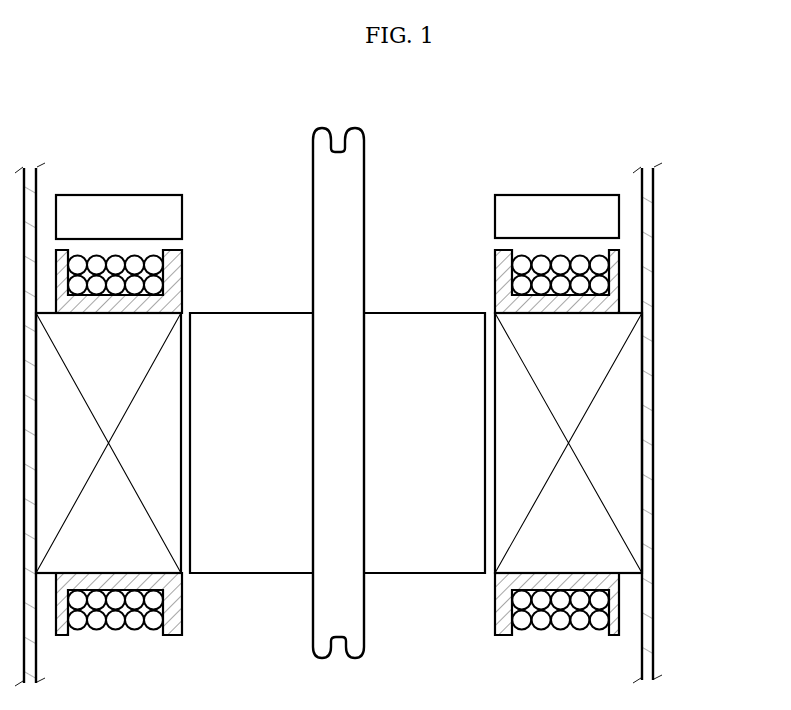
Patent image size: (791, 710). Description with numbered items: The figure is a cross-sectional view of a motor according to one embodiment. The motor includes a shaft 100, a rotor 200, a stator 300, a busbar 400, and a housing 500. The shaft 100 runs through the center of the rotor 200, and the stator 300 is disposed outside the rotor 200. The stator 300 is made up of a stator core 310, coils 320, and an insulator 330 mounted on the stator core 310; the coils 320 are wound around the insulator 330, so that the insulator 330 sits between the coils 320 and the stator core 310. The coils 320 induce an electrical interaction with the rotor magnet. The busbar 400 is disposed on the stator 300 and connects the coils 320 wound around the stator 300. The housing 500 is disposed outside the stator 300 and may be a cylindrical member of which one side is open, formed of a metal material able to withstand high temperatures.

The shaft 100 is at (372, 161).
The rotor 200 is at (449, 470).
The stator 300 is at (639, 442).
The stator core 310 is at (620, 375).
The coils 320 is at (603, 284).
The insulator 330 is at (617, 301).
The busbar 400 is at (572, 187).
The housing 500 is at (663, 582).